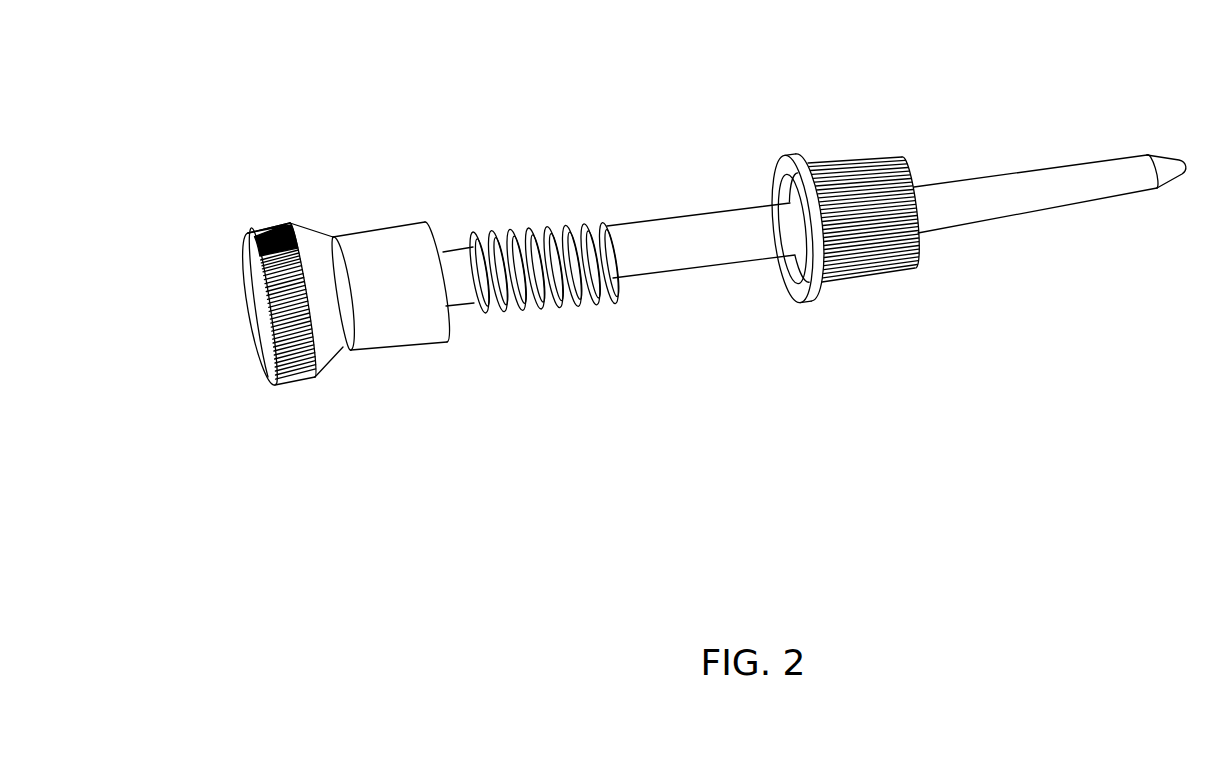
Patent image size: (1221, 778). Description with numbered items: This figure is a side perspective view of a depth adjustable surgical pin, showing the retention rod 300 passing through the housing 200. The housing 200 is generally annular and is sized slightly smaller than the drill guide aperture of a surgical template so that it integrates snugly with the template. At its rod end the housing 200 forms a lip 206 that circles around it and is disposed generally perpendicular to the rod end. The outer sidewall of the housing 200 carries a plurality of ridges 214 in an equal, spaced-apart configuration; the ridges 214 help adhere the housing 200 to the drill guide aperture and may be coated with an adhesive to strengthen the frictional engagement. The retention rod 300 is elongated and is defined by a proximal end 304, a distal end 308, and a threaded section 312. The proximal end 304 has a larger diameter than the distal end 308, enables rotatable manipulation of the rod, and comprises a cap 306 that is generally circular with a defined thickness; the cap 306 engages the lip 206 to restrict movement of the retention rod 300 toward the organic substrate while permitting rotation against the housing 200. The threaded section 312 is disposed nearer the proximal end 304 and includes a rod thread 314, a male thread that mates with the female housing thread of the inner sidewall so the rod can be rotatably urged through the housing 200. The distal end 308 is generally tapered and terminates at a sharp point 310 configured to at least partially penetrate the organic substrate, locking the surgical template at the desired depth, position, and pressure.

The housing 200 is at (847, 215).
The lip 206 is at (810, 290).
The ridges 214 is at (873, 265).
The retention rod 300 is at (679, 250).
The proximal end 304 is at (403, 333).
The cap 306 is at (260, 343).
The distal end 308 is at (1145, 187).
The sharp point 310 is at (1173, 163).
The threaded section 312 is at (482, 348).
The rod thread 314 is at (603, 307).